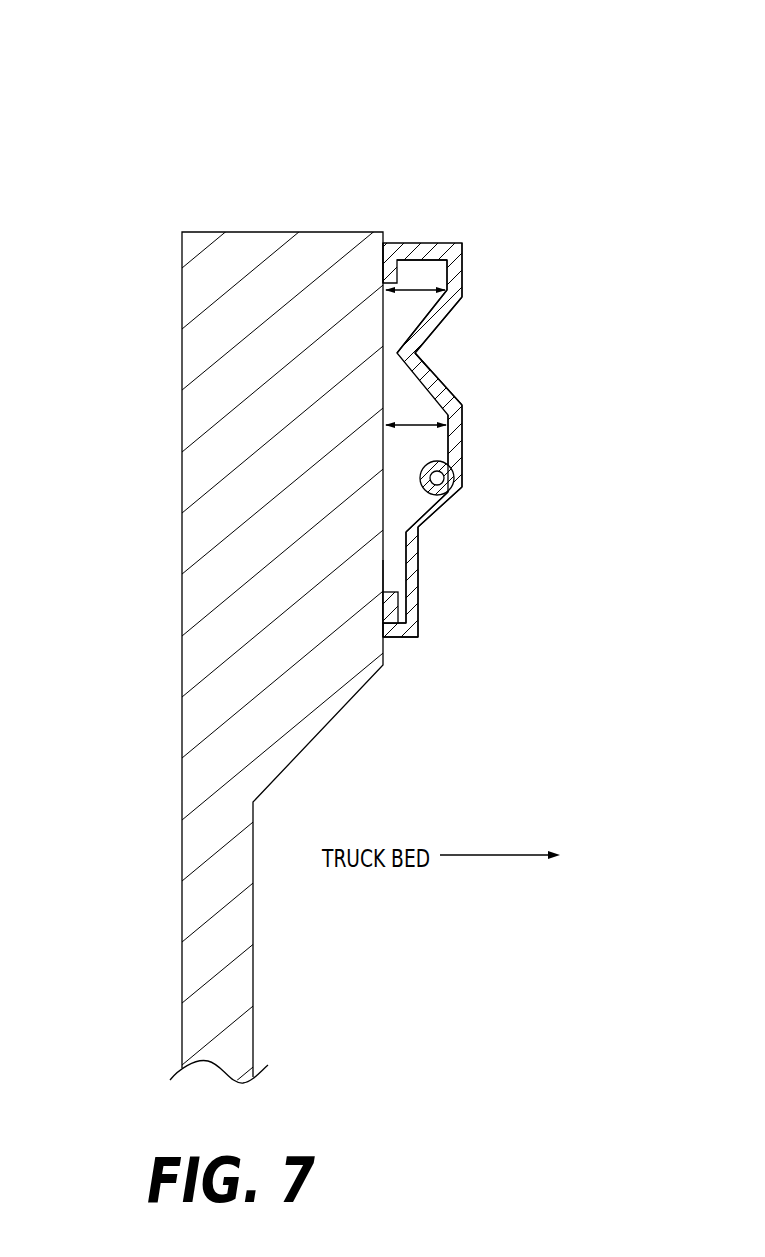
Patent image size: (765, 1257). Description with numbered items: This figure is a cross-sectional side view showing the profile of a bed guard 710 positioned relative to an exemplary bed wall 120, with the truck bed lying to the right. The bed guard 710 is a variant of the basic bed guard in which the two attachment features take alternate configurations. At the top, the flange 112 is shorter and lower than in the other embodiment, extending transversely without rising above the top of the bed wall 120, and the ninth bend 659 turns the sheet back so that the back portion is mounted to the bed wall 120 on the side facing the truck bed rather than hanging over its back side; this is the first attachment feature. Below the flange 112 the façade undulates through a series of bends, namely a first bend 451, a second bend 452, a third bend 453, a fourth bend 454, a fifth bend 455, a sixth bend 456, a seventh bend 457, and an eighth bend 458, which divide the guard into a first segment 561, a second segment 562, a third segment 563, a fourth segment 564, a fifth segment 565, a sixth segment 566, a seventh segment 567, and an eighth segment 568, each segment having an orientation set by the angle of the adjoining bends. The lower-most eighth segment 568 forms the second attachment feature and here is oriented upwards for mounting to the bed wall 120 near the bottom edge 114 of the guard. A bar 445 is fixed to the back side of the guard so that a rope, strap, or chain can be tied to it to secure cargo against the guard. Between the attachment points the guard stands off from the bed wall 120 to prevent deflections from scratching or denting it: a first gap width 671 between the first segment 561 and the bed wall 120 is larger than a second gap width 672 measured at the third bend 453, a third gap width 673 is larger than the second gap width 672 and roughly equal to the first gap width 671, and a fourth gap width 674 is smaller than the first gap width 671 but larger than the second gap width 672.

The bed guard 710 is at (111, 82).
The flange 112 is at (442, 243).
The bottom edge 114 is at (383, 584).
The bed wall 120 is at (182, 1041).
The bar 445 is at (420, 474).
The first bend 451 is at (462, 250).
The second bend 452 is at (462, 300).
The third bend 453 is at (416, 352).
The fourth bend 454 is at (462, 410).
The fifth bend 455 is at (460, 491).
The sixth bend 456 is at (419, 535).
The seventh bend 457 is at (419, 637).
The eighth bend 458 is at (384, 637).
The first segment 561 is at (462, 270).
The second segment 562 is at (432, 335).
The third segment 563 is at (439, 380).
The fourth segment 564 is at (462, 432).
The fifth segment 565 is at (440, 508).
The sixth segment 566 is at (419, 592).
The seventh segment 567 is at (406, 637).
The eighth segment 568 is at (383, 611).
The ninth bend 659 is at (391, 243).
The first gap width 671 is at (425, 243).
The second gap width 672 is at (396, 330).
The third gap width 673 is at (386, 425).
The fourth gap width 674 is at (394, 551).